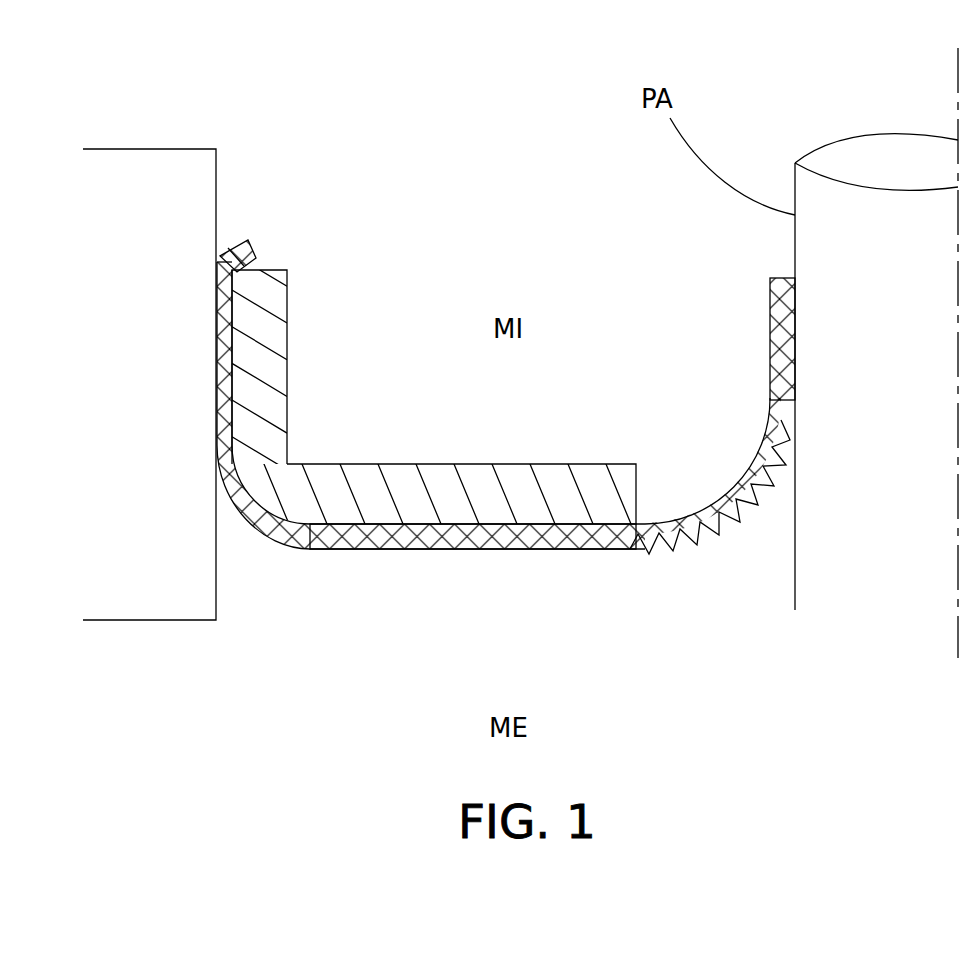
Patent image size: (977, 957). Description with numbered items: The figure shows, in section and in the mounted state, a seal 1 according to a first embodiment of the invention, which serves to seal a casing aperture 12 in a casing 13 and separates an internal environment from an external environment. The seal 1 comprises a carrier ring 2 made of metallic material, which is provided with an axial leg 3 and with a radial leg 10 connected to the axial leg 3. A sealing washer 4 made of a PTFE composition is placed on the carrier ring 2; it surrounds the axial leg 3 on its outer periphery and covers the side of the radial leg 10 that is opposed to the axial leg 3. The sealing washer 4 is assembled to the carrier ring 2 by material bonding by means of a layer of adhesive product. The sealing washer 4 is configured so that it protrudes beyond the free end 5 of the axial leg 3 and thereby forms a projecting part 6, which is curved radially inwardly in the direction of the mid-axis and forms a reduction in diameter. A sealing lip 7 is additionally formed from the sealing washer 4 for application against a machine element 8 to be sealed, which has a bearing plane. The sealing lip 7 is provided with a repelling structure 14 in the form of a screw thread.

The seal 1 is at (495, 195).
The carrier ring 2 is at (288, 393).
The axial leg 3 is at (272, 268).
The sealing washer 4 is at (545, 552).
The free end 5 is at (258, 262).
The projecting part 6 is at (234, 246).
The sealing lip 7 is at (771, 310).
The machine element 8 is at (847, 197).
The radial leg 10 is at (357, 507).
The casing aperture 12 is at (244, 637).
The casing 13 is at (143, 187).
The repelling structure 14 is at (740, 545).